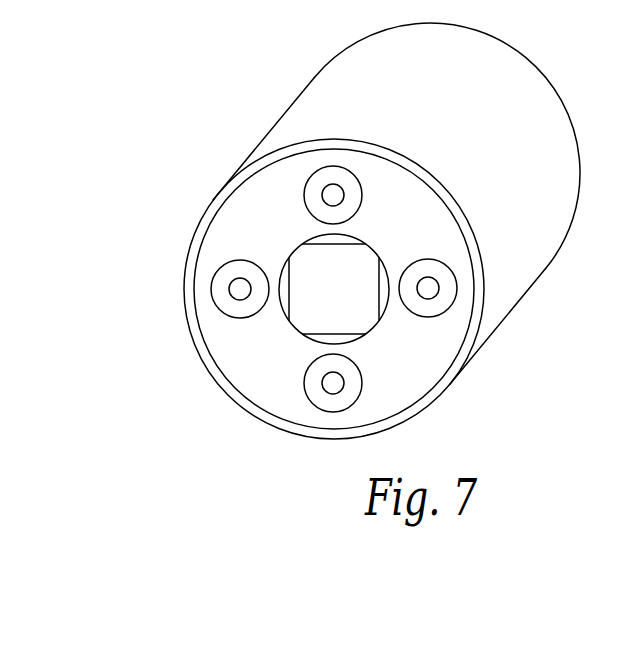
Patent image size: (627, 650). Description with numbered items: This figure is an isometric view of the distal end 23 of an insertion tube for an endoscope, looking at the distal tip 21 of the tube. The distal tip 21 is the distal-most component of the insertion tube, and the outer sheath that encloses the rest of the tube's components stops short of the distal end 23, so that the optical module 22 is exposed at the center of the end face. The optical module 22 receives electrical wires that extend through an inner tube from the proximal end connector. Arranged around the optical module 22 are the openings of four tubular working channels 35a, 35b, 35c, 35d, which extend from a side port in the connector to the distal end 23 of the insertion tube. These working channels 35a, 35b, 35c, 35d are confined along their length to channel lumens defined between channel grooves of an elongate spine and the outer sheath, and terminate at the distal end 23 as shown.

The distal tip 21 is at (290, 130).
The optical module 22 is at (355, 295).
The distal end 23 is at (243, 378).
The working channel 35a is at (303, 198).
The working channel 35b is at (455, 280).
The working channel 35c is at (357, 405).
The working channel 35d is at (217, 309).